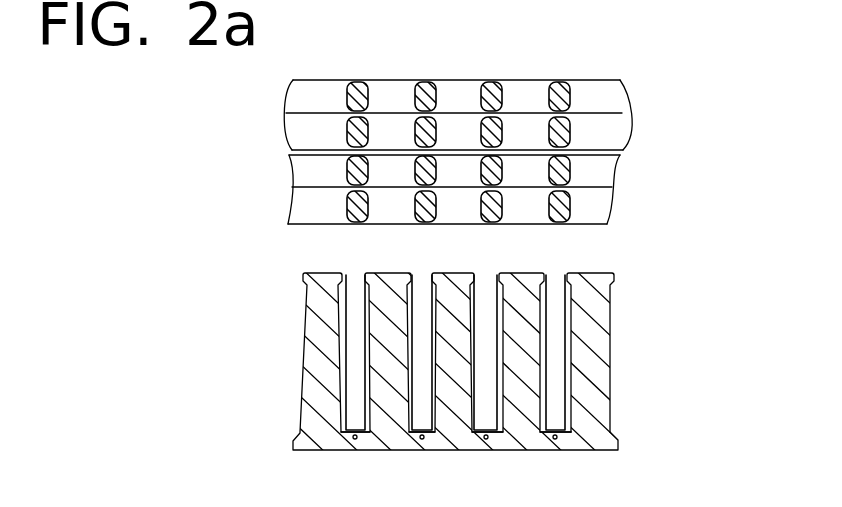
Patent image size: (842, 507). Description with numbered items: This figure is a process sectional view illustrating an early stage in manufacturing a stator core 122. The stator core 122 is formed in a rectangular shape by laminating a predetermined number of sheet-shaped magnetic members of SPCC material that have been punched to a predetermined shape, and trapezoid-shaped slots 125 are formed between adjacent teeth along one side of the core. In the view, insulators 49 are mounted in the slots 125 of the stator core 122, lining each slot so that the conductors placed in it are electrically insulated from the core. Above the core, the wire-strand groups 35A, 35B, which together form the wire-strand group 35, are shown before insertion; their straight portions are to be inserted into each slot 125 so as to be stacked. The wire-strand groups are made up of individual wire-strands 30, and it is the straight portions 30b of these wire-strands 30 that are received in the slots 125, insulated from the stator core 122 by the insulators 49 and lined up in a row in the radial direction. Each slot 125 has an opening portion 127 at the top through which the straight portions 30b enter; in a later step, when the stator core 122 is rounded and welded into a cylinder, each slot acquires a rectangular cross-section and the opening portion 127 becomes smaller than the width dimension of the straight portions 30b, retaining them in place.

The wire-strand group 35 is at (474, 152).
The wire-strand group 35A is at (641, 108).
The wire-strand group 35B is at (634, 183).
The wire-strand 30 is at (436, 152).
The straight portion 30b is at (347, 201).
The stator core 122 is at (449, 347).
The insulator 49 is at (578, 299).
The opening portion 127 is at (557, 285).
The slot 125 is at (561, 372).